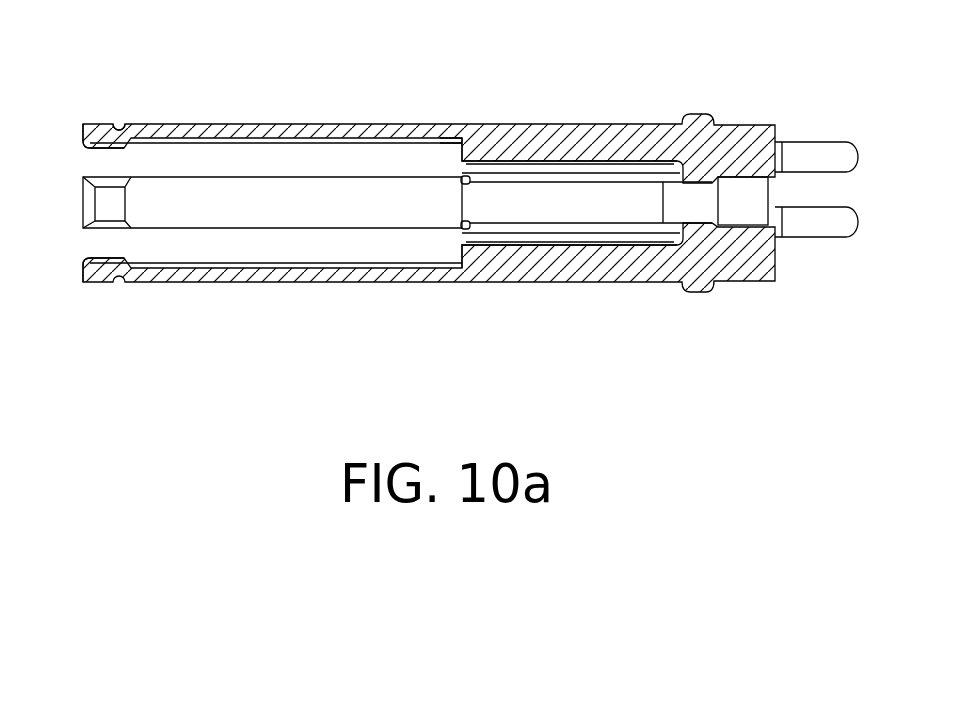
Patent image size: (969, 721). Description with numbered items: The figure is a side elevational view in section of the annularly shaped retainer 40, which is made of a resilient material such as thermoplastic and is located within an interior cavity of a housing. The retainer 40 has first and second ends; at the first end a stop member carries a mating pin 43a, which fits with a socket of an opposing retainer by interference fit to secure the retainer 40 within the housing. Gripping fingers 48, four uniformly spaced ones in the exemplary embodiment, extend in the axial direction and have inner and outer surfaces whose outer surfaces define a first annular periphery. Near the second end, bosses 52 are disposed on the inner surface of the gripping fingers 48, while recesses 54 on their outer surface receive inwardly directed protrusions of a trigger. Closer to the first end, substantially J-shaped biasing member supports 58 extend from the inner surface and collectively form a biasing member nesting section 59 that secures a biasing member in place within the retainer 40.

The retainer 40 is at (742, 147).
The pin 43a is at (822, 158).
The gripping fingers 48 is at (268, 123).
The bosses 52 is at (102, 132).
The recesses 54 is at (120, 122).
The biasing member supports 58 is at (486, 143).
The biasing member nesting section 59 is at (457, 148).